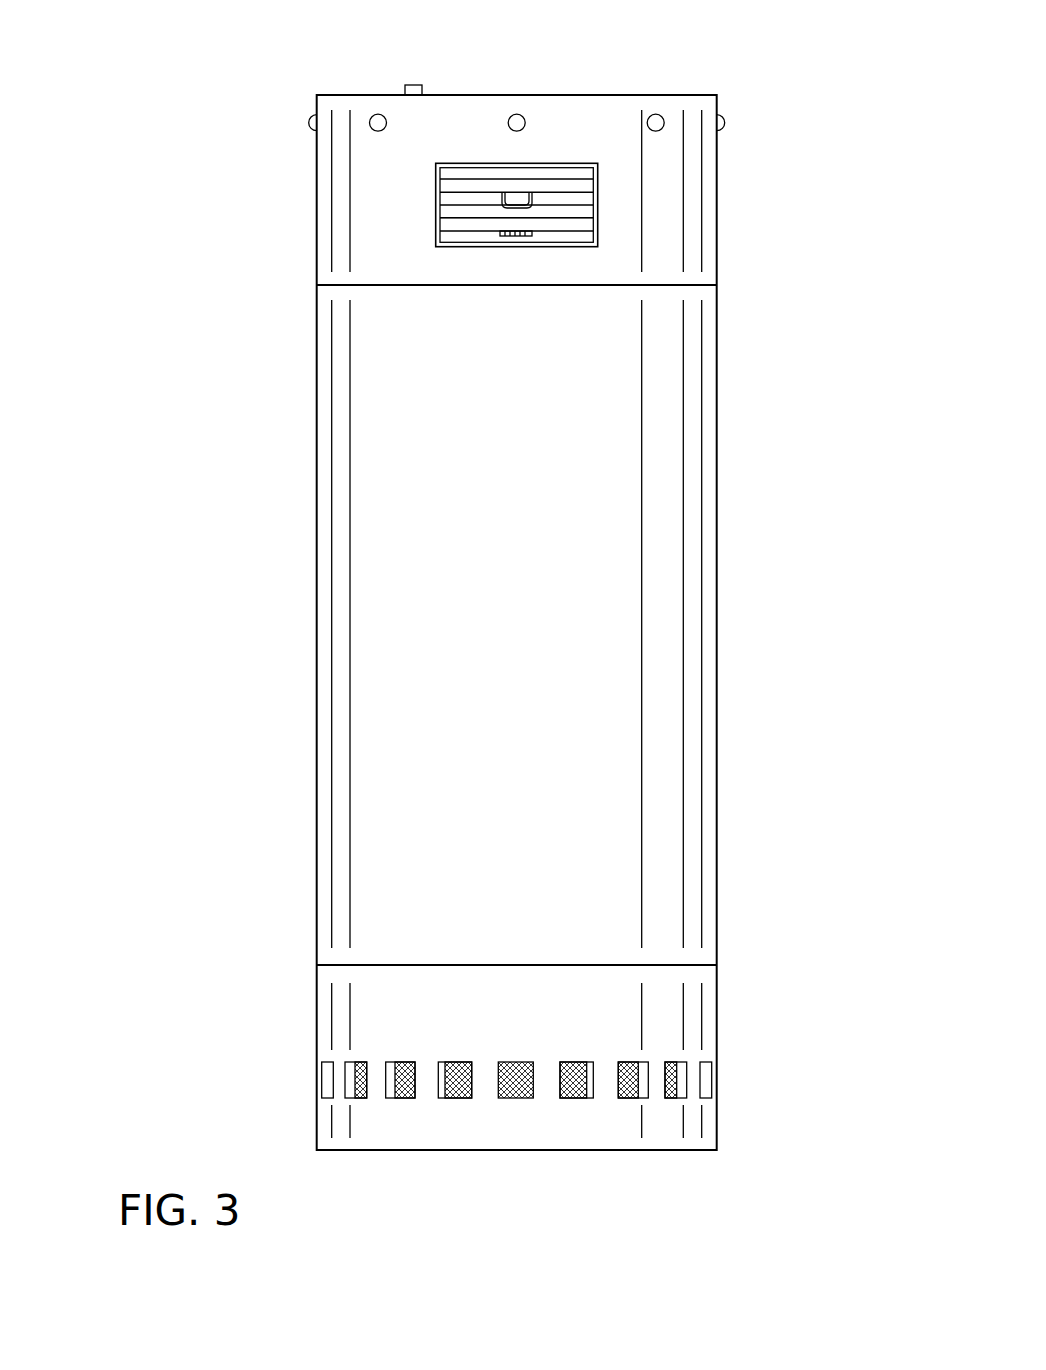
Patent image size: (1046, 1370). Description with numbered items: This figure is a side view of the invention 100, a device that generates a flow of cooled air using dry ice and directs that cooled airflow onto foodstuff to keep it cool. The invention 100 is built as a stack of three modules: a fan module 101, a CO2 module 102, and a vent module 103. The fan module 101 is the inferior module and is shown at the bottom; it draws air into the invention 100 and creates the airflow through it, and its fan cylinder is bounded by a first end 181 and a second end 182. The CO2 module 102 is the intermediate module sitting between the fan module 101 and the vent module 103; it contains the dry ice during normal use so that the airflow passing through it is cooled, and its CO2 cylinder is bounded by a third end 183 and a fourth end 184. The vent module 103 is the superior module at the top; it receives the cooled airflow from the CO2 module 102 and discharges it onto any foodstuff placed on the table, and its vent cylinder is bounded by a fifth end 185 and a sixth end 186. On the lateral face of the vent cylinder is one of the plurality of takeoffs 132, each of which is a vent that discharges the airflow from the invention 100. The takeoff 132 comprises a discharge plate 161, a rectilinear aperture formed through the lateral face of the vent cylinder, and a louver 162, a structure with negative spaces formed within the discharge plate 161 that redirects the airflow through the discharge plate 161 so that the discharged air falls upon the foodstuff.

The invention 100 is at (140, 100).
The fan module 101 is at (692, 1025).
The CO2 module 102 is at (673, 847).
The vent module 103 is at (693, 188).
The takeoff 132 is at (569, 163).
The discharge plate 161 is at (598, 222).
The louver 162 is at (467, 218).
The first end 181 is at (632, 1152).
The second end 182 is at (604, 966).
The third end 183 is at (503, 964).
The fourth end 184 is at (503, 285).
The fifth end 185 is at (400, 285).
The sixth end 186 is at (487, 96).